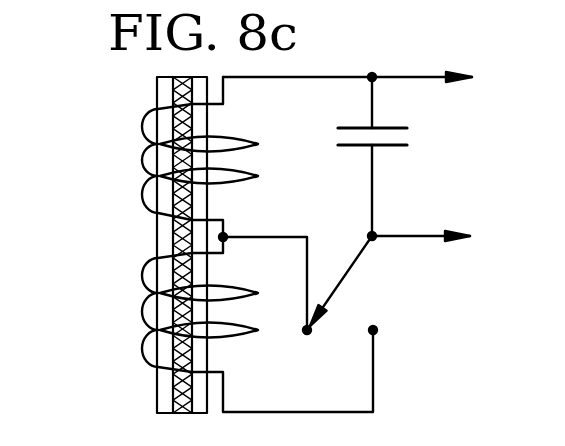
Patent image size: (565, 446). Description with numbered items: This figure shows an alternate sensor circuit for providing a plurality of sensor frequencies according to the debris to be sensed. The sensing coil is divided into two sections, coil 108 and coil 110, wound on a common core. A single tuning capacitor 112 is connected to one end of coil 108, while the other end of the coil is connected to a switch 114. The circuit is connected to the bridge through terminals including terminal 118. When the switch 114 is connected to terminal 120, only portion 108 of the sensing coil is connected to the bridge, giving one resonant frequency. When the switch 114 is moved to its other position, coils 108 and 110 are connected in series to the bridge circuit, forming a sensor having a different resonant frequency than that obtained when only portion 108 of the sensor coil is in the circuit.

The sensing coil section 108 is at (147, 176).
The sensing coil section 110 is at (146, 275).
The tuning capacitor 112 is at (395, 126).
The switch 114 is at (353, 272).
The bridge terminal 118 is at (458, 72).
The terminal 120 is at (310, 333).